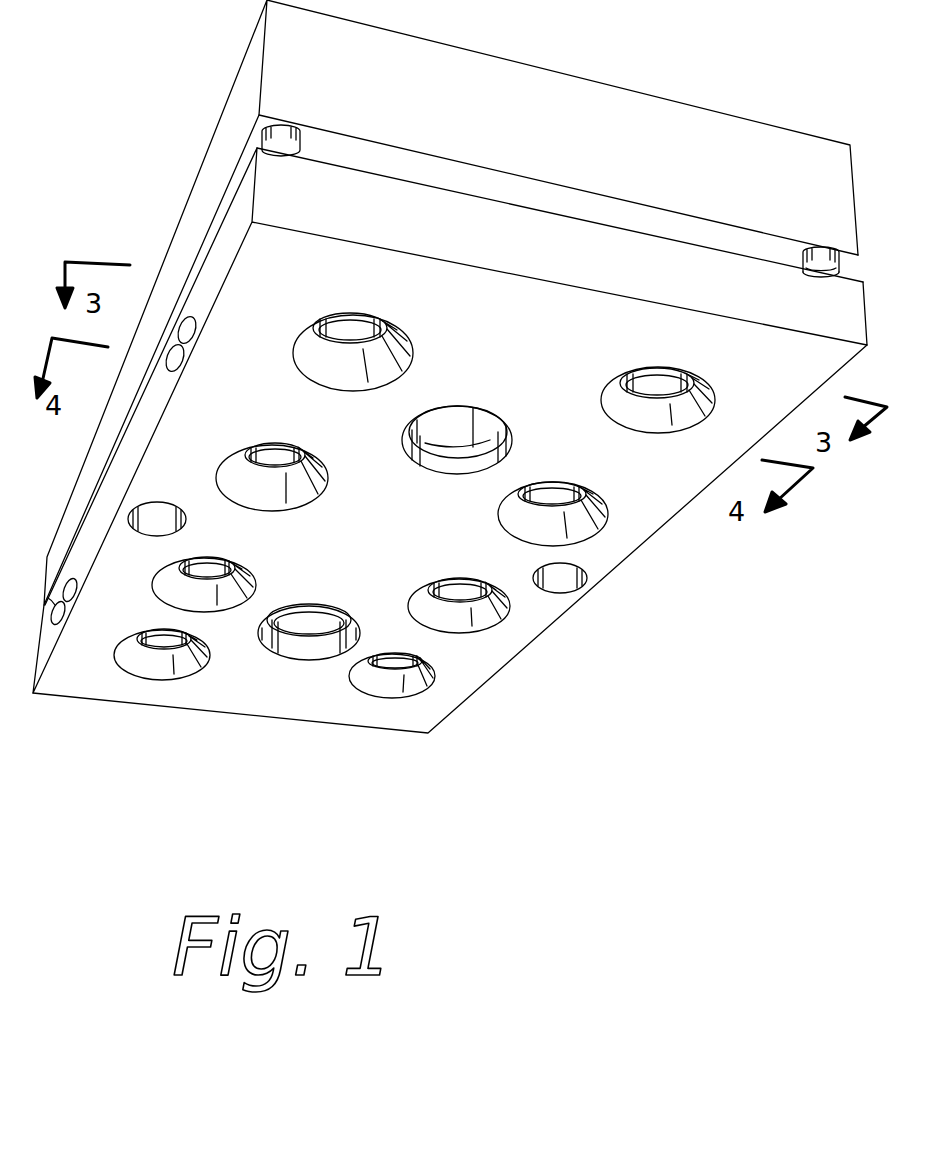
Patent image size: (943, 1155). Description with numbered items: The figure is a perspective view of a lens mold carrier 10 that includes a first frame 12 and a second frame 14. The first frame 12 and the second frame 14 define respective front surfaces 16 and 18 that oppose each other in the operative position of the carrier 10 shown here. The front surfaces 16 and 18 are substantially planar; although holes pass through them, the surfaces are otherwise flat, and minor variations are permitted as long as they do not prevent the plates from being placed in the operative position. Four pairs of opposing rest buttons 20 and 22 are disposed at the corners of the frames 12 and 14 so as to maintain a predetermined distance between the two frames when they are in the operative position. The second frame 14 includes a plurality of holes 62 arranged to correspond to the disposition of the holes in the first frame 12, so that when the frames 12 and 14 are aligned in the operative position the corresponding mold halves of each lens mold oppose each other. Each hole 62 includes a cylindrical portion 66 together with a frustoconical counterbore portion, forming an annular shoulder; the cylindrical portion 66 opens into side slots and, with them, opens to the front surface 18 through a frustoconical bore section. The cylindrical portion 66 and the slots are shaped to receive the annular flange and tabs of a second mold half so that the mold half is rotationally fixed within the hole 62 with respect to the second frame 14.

The lens mold carrier 10 is at (686, 578).
The first frame 12 is at (228, 93).
The second frame 14 is at (127, 702).
The front surface 16 is at (584, 210).
The front surface 18 is at (496, 188).
The rest button 20 is at (815, 249).
The rest button 22 is at (828, 278).
The hole 62 is at (305, 473).
The cylindrical portion 66 is at (663, 379).